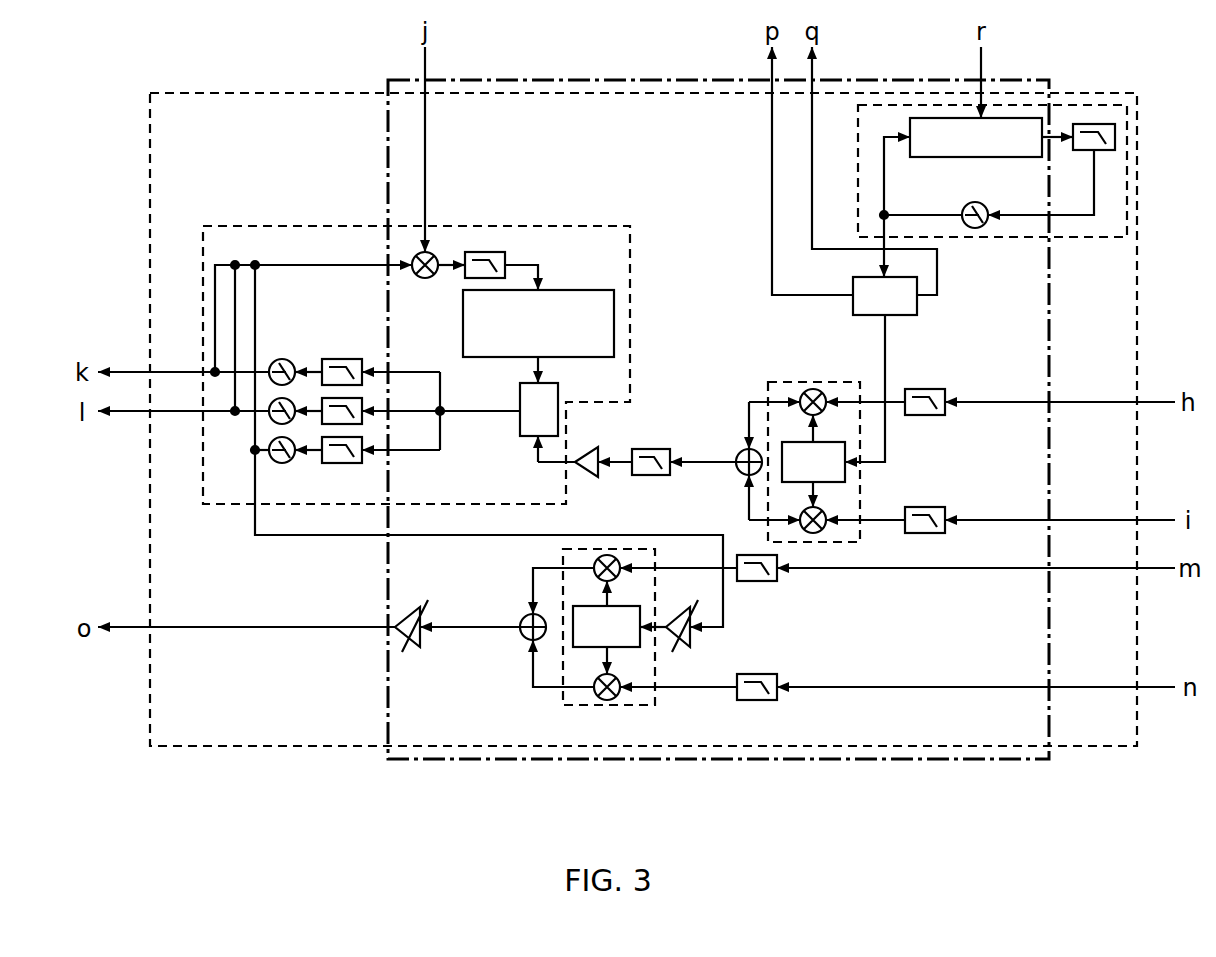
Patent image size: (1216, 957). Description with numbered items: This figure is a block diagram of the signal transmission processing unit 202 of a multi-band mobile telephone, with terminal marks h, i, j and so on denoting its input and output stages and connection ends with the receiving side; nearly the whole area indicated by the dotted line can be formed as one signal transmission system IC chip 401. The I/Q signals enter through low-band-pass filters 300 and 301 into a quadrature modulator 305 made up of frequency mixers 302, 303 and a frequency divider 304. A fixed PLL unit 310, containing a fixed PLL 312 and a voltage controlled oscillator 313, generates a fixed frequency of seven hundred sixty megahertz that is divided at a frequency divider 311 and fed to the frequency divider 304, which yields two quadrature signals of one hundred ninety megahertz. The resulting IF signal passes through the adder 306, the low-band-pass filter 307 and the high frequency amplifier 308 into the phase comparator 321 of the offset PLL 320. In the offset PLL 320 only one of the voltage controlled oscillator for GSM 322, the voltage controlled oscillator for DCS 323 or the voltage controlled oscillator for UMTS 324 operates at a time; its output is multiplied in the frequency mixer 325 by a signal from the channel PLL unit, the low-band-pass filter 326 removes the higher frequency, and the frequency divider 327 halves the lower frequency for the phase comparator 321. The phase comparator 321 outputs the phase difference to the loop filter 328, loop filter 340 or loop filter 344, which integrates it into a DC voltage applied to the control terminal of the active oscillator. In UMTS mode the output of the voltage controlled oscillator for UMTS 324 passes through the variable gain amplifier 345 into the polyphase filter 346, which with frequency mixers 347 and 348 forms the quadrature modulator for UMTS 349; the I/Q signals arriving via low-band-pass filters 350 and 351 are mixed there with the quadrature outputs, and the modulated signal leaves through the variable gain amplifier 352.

The signal transmission processing unit 202 is at (1139, 312).
The signal transmission system IC chip 401 is at (386, 693).
The low-band-pass filter 300 is at (930, 389).
The low-band-pass filter 301 is at (930, 507).
The frequency mixer 302 is at (818, 387).
The frequency mixer 303 is at (840, 536).
The frequency divider 304 is at (858, 466).
The quadrature modulator 305 is at (805, 378).
The adder 306 is at (742, 474).
The low-band-pass filter 307 is at (658, 476).
The high frequency amplifier 308 is at (586, 452).
The fixed PLL unit 310 is at (1062, 240).
The frequency divider 311 is at (920, 312).
The fixed PLL 312 is at (974, 158).
The voltage controlled oscillator 313 is at (963, 209).
The offset PLL 320 is at (632, 262).
The phase comparator 321 is at (520, 440).
The voltage controlled oscillator for GSM 322 is at (288, 360).
The voltage controlled oscillator for DCS 323 is at (274, 424).
The voltage controlled oscillator for UMTS 324 is at (288, 462).
The frequency mixer 325 is at (436, 254).
The low-band-pass filter 326 is at (505, 262).
The frequency divider 327 is at (490, 360).
The loop filter 328 is at (340, 359).
The loop filter 340 is at (372, 402).
The loop filter 344 is at (344, 463).
The variable gain amplifier 345 is at (680, 648).
The polyphase filter 346 is at (634, 604).
The frequency mixer 347 is at (592, 566).
The frequency mixer 348 is at (606, 701).
The quadrature modulator for UMTS 349 is at (657, 706).
The low-band-pass filter 350 is at (758, 581).
The low-band-pass filter 351 is at (758, 674).
The variable gain amplifier 352 is at (410, 646).